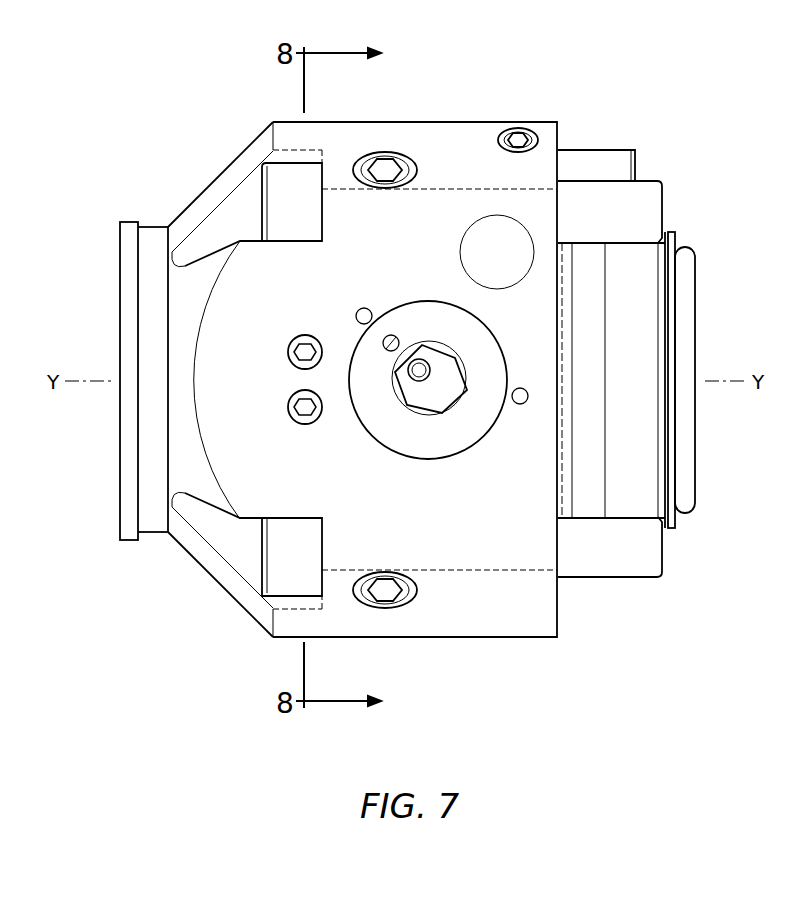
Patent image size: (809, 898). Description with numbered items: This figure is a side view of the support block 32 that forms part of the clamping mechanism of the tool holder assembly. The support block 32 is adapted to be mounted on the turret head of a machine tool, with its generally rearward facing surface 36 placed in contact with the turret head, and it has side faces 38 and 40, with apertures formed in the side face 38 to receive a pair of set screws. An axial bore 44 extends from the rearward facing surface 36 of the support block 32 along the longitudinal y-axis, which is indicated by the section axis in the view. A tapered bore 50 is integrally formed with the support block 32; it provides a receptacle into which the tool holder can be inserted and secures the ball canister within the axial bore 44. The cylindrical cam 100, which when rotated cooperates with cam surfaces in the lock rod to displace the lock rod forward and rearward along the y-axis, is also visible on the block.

The support block 32 is at (525, 77).
The rearward facing surface 36 is at (637, 164).
The side face 38 is at (436, 546).
The side face 40 is at (416, 120).
The axial bore 44 is at (119, 278).
The tapered bore 50 is at (636, 489).
The cylindrical cam 100 is at (459, 466).